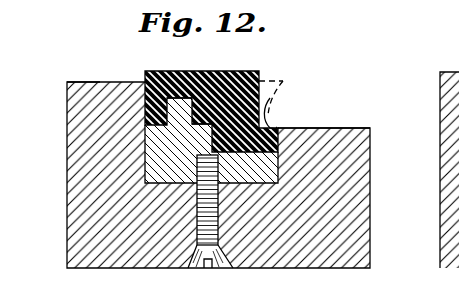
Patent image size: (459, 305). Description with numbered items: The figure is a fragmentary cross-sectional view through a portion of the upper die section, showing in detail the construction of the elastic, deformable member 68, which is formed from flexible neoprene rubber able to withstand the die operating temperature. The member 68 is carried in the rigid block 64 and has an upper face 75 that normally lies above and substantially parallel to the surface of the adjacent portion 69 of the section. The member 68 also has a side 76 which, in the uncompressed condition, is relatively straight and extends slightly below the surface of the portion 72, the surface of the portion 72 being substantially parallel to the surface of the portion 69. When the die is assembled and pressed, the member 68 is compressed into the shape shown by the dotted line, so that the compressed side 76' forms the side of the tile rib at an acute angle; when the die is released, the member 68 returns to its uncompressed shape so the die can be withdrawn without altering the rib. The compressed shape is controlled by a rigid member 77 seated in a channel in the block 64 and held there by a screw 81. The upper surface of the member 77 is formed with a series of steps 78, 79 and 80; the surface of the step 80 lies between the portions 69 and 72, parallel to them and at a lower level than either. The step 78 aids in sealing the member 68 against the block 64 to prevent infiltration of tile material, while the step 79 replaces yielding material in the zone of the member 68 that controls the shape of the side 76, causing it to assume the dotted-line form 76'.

The block 64 is at (370, 185).
The member 68 is at (259, 72).
The portion 69 is at (72, 81).
The portion 72 is at (348, 128).
The upper face 75 is at (178, 71).
The side 76 is at (300, 98).
The side (compressed) 76' is at (293, 78).
The member 77 is at (297, 128).
The step 78 is at (167, 99).
The step 79 is at (211, 125).
The step 80 is at (276, 127).
The screw 81 is at (212, 270).